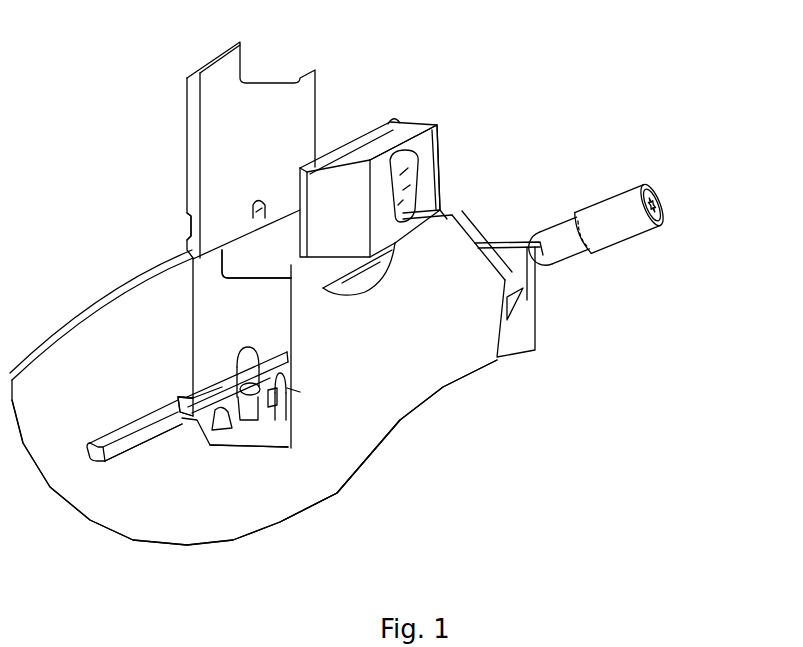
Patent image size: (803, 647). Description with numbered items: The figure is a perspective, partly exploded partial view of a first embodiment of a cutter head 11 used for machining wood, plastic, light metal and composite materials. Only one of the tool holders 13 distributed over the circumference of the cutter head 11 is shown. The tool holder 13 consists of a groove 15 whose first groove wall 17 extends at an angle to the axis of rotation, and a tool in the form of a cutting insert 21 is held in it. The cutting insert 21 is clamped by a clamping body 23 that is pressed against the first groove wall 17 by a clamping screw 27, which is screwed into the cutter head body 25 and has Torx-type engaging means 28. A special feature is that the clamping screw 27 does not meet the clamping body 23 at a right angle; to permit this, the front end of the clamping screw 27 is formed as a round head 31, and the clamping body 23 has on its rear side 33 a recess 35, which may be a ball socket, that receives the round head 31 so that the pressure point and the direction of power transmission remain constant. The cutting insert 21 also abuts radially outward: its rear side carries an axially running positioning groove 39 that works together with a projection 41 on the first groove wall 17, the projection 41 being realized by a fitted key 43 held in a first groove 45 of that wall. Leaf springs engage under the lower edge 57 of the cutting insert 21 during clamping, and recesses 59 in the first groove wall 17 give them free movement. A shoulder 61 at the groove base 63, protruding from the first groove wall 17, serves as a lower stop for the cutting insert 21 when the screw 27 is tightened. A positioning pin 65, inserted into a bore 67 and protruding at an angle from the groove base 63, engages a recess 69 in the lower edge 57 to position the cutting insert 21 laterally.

The cutter head 11 is at (503, 92).
The tool holder 13 is at (199, 297).
The groove 15 is at (253, 397).
The first groove wall 17 is at (173, 279).
The cutting insert 21 is at (209, 218).
The clamping body 23 is at (376, 165).
The cutter head body 25 is at (360, 508).
The clamping screw 27 is at (598, 179).
The engaging means 28 is at (694, 234).
The round head 31 is at (521, 288).
The rear side 33 is at (455, 184).
The recess 35 is at (465, 186).
The positioning groove 39 is at (144, 170).
The projection 41 is at (166, 474).
The fitted key 43 is at (141, 515).
The first groove 45 is at (173, 496).
The lower edge 57 is at (177, 234).
The recesses 59 is at (304, 472).
The shoulder 61 is at (212, 506).
The groove base 63 is at (282, 497).
The positioning pin 65 is at (386, 421).
The bore 67 is at (278, 518).
The recess 69 is at (271, 112).